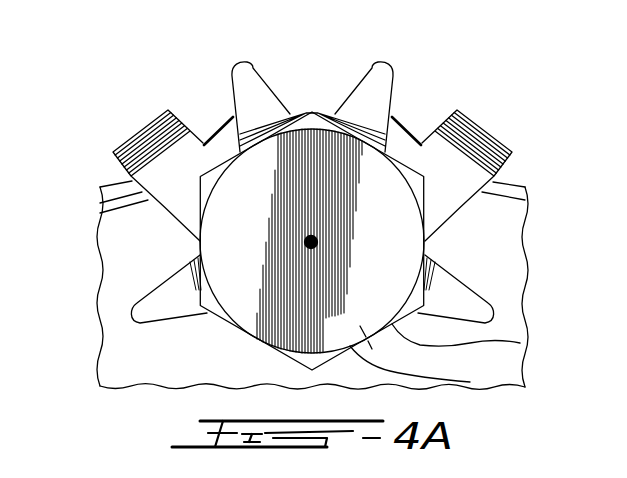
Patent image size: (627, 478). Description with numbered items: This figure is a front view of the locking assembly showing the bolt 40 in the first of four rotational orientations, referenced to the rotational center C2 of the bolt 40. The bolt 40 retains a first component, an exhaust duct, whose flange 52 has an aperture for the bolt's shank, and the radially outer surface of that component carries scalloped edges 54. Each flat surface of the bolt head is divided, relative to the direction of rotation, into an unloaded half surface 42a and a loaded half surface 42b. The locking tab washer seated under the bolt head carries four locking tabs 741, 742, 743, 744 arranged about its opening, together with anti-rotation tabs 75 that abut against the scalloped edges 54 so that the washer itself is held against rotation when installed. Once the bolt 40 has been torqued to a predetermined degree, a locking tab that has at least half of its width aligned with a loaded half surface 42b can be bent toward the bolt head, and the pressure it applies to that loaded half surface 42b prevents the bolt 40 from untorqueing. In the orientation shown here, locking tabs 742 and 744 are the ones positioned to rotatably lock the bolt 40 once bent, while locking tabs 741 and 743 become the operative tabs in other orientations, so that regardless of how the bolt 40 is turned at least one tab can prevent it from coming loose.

The bolt 40 is at (313, 152).
The unloaded half surface 42a is at (515, 343).
The loaded half surface 42b is at (470, 382).
The flange 52 is at (500, 228).
The scalloped edges 54 is at (403, 130).
The locking tab 741 is at (143, 320).
The locking tab 742 is at (240, 77).
The locking tab 743 is at (381, 77).
The locking tab 744 is at (477, 307).
The anti-rotation tab 75 is at (150, 137).
The rotational center C2 is at (325, 261).